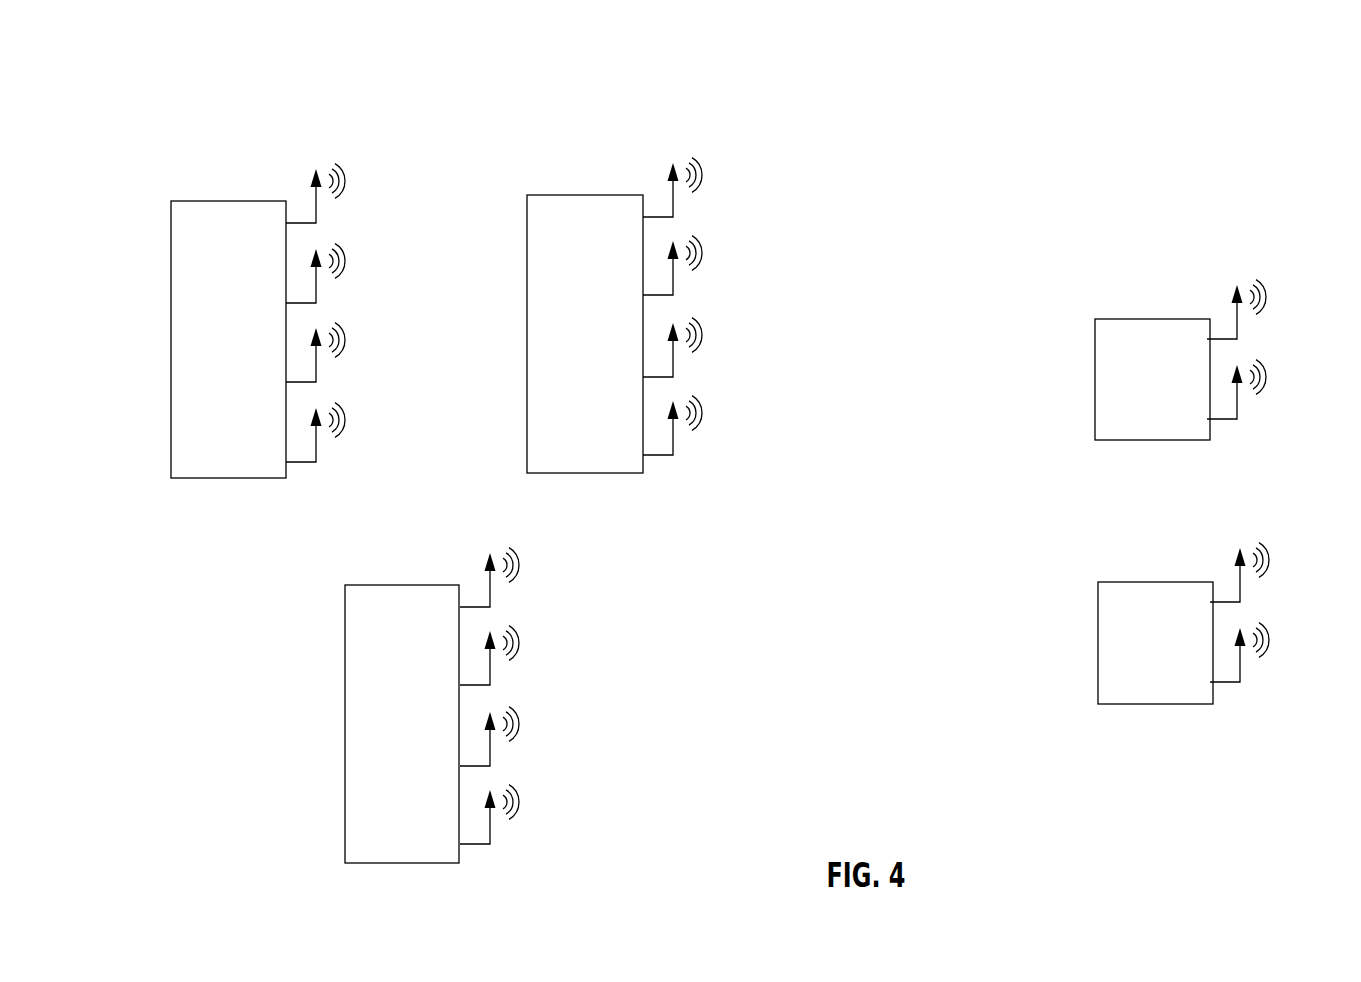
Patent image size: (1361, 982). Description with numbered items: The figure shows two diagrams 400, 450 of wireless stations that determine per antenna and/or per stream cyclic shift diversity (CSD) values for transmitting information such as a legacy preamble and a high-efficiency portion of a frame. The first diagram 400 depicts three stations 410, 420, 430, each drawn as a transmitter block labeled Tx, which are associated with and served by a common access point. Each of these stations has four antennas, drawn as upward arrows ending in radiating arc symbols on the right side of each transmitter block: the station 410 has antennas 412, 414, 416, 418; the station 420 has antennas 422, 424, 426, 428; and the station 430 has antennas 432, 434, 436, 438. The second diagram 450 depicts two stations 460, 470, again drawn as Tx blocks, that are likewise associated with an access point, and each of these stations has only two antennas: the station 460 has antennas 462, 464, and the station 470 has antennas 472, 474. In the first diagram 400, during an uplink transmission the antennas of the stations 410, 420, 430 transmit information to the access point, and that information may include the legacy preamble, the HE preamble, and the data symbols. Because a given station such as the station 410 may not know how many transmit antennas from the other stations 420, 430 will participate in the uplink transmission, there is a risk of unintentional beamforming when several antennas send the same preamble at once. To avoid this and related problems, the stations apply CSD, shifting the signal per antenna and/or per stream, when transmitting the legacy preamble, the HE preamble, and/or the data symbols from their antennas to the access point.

The diagram 400 is at (203, 66).
The diagram 450 is at (998, 83).
The station 410 is at (173, 200).
The antenna 412 is at (341, 163).
The antenna 414 is at (341, 243).
The antenna 416 is at (341, 322).
The antenna 418 is at (341, 402).
The station 420 is at (529, 194).
The antenna 422 is at (696, 157).
The antenna 424 is at (696, 235).
The antenna 426 is at (696, 317).
The antenna 428 is at (696, 395).
The station 430 is at (347, 584).
The antenna 432 is at (513, 547).
The antenna 434 is at (513, 625).
The antenna 436 is at (513, 706).
The antenna 438 is at (513, 784).
The station 460 is at (1097, 318).
The antenna 462 is at (1264, 279).
The antenna 464 is at (1266, 359).
The station 470 is at (1100, 581).
The antenna 472 is at (1266, 542).
The antenna 474 is at (1269, 622).